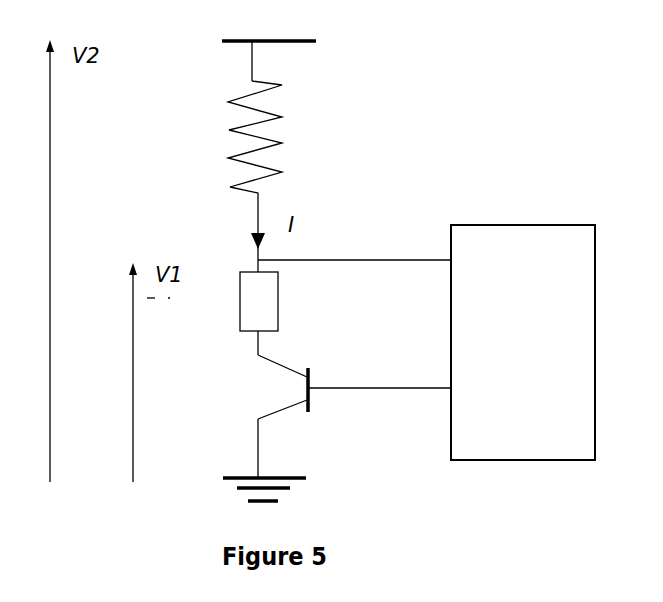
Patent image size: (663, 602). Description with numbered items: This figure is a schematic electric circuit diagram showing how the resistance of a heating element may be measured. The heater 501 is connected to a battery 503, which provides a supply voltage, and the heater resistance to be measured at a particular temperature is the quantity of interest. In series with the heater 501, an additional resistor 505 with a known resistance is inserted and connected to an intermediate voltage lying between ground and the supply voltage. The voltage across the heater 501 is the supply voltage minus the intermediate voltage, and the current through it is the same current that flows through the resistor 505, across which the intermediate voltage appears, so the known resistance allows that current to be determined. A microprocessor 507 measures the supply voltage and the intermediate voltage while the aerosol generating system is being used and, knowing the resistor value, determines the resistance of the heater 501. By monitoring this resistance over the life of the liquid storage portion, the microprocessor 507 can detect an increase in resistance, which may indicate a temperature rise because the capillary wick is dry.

The heater 501 is at (274, 129).
The battery 503 is at (237, 55).
The additional resistor 505 is at (288, 302).
The microprocessor 507 is at (547, 357).